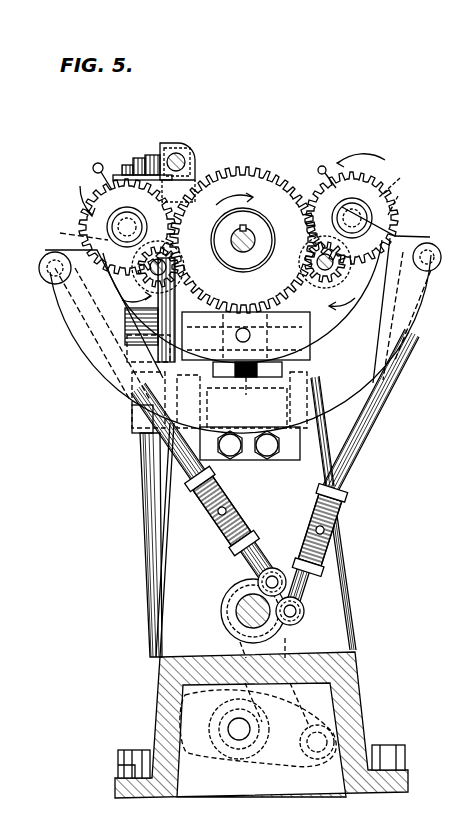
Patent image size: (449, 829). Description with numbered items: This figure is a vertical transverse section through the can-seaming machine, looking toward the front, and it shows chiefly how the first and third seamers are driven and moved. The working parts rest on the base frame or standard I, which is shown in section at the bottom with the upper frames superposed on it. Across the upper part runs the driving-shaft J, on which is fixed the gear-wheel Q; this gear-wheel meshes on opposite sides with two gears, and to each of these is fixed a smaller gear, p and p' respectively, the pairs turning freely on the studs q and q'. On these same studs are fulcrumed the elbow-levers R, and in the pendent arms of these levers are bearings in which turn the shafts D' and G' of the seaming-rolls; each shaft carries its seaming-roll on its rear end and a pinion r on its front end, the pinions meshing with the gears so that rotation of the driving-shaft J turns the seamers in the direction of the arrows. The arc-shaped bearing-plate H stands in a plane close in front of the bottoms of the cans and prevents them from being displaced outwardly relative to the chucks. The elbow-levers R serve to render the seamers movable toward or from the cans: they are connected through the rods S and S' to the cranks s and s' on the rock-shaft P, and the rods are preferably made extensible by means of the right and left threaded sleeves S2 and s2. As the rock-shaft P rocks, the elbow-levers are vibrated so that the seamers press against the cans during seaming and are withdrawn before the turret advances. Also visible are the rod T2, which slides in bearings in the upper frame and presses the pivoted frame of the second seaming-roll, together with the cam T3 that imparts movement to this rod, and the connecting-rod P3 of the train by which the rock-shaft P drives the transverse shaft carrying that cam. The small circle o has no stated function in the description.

The arc-shaped bearing-plate H is at (240, 336).
The elbow-lever R is at (78, 240).
The gear-wheel Q is at (243, 240).
The driving-shaft J is at (256, 232).
The shaft of seaming-roll G G' is at (146, 229).
The pinion r is at (358, 266).
The shaft of seaming-roll D D' is at (352, 247).
The smaller gear p' is at (153, 163).
The pins o is at (235, 172).
The stud q' is at (76, 196).
The smaller gear p is at (392, 180).
The stud q is at (398, 198).
The rod T2 is at (217, 343).
The cam T3 is at (250, 418).
The rod S' is at (205, 485).
The right and left threaded sleeve S2 is at (224, 510).
The rod S is at (351, 489).
The right and left threaded sleeve s2 is at (329, 530).
The rock-shaft P is at (245, 618).
The crank s' is at (274, 572).
The crank s is at (298, 614).
The connecting-rod P3 is at (140, 550).
The base frame or standard I is at (261, 725).